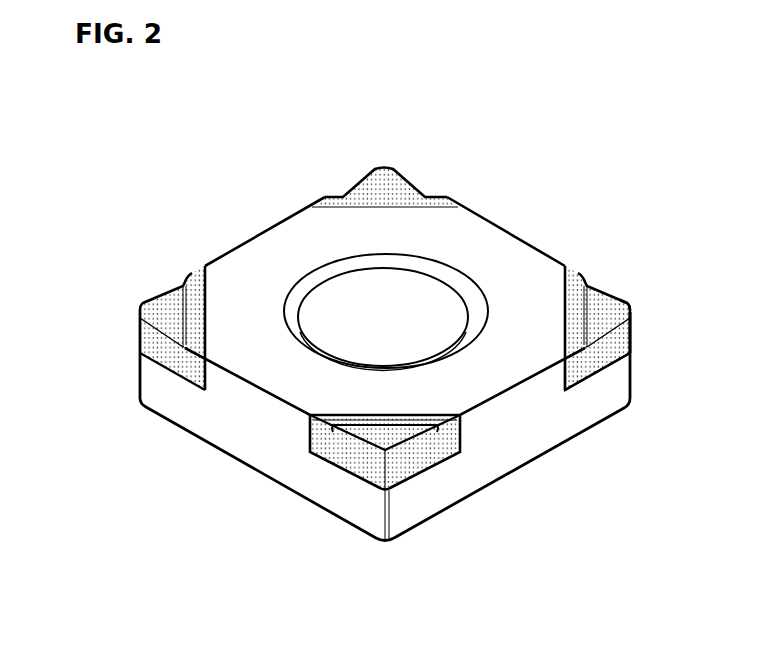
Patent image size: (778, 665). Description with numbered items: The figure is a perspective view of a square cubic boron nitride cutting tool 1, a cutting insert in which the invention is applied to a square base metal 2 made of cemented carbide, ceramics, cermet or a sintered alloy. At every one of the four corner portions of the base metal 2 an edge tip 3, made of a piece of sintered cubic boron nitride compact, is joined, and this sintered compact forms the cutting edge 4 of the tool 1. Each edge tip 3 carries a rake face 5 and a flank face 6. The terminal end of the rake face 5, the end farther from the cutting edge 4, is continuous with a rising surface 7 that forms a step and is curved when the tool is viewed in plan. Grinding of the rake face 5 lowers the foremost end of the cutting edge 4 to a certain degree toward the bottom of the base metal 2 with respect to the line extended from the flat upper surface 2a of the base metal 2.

The cubic boron nitride cutting tool 1 is at (513, 209).
The base metal 2 is at (533, 430).
The upper surface 2a is at (266, 238).
The edge tip 3 is at (370, 168).
The cutting edge 4 is at (632, 323).
The rake face 5 is at (628, 298).
The flank face 6 is at (605, 360).
The rising surface 7 is at (588, 288).